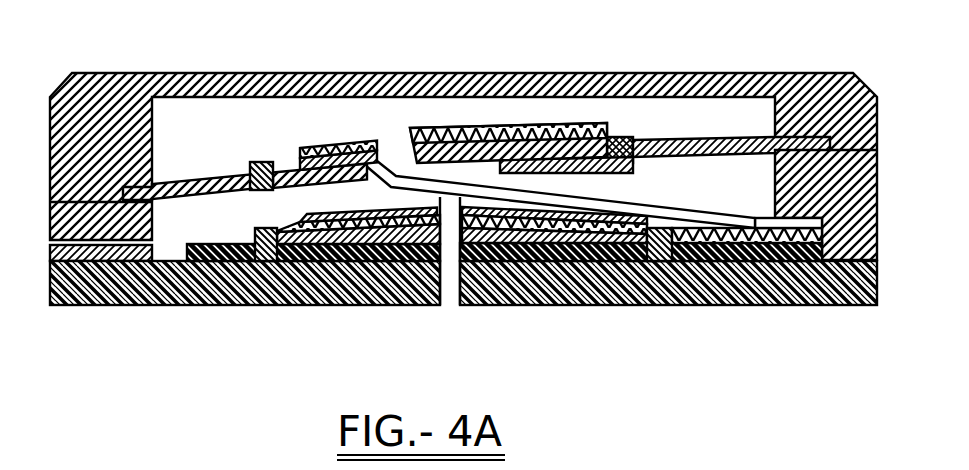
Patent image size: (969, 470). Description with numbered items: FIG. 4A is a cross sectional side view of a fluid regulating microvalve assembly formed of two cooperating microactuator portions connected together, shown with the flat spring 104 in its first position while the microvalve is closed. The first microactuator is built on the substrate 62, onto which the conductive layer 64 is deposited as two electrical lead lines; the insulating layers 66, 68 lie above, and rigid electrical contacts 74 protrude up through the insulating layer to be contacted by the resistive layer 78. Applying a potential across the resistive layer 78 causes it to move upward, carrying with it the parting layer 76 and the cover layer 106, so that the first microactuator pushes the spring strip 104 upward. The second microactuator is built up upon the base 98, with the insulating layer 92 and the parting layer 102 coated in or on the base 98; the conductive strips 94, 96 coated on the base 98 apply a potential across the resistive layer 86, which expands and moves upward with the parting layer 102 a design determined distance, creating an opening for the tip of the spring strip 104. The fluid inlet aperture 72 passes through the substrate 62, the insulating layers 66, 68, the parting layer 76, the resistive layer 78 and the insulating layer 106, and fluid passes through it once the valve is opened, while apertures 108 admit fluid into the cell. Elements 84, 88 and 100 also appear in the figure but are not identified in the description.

The substrate 62 is at (137, 305).
The conductive layer 64 is at (273, 258).
The insulating layer 66 is at (308, 240).
The insulating layer 68 is at (497, 225).
The fluid inlet aperture 72 is at (449, 297).
The protruding electrical contact 74 is at (255, 233).
The parting layer 76 is at (400, 212).
The resistive layer 78 is at (352, 224).
The contact bar 84 is at (752, 262).
The resistive layer 86 is at (366, 147).
The intermediate layer 88 is at (335, 156).
The insulating layer 92 is at (305, 170).
The conductive strip 94 is at (673, 242).
The conductive strip 96 is at (252, 168).
The base 98 is at (213, 178).
The housing 100 is at (548, 86).
The parting layer 102 is at (485, 140).
The spring strip 104 is at (545, 200).
The cover layer 106 is at (438, 298).
The aperture 108 is at (96, 252).